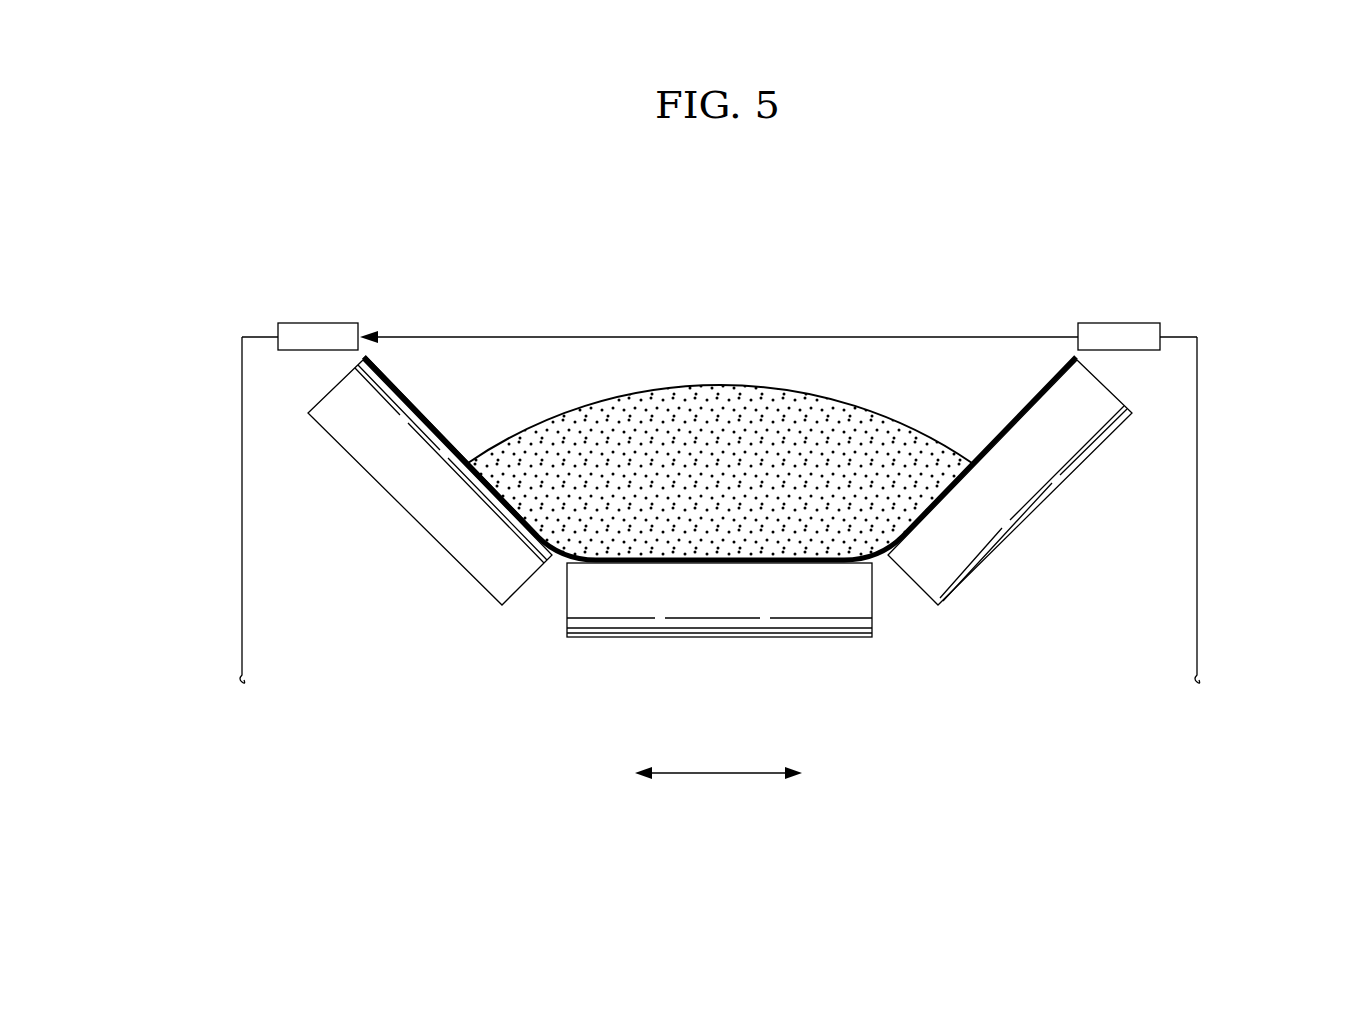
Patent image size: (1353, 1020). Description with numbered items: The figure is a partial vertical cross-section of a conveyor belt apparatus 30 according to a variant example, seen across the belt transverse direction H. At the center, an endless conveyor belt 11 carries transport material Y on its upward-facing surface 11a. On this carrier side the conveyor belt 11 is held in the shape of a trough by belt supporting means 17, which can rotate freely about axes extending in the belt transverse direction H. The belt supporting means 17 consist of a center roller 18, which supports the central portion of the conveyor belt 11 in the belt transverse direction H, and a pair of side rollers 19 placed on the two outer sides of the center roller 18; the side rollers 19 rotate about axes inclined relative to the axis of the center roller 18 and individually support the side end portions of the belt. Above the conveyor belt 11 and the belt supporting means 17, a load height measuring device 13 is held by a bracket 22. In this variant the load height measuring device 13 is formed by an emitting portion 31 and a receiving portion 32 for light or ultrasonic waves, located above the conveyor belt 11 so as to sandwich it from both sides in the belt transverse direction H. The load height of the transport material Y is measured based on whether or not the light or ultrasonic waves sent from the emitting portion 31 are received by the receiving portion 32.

The conveyor belt 11 is at (415, 388).
The surface 11a is at (432, 425).
The load height measuring device 13 is at (288, 248).
The belt supporting means 17 is at (368, 525).
The center roller 18 is at (720, 605).
The side rollers 19 is at (415, 530).
The bracket 22 is at (242, 520).
The conveyor belt apparatus 30 is at (1175, 182).
The emitting portion 31 is at (1118, 337).
The receiving portion 32 is at (318, 337).
The transport material Y is at (862, 412).
The belt transverse direction H is at (718, 790).